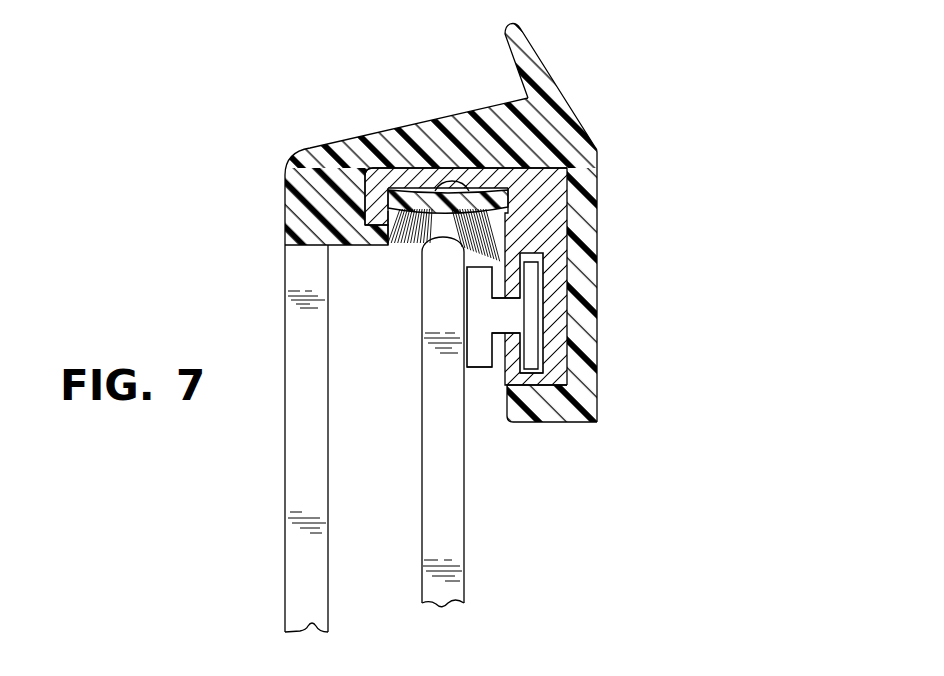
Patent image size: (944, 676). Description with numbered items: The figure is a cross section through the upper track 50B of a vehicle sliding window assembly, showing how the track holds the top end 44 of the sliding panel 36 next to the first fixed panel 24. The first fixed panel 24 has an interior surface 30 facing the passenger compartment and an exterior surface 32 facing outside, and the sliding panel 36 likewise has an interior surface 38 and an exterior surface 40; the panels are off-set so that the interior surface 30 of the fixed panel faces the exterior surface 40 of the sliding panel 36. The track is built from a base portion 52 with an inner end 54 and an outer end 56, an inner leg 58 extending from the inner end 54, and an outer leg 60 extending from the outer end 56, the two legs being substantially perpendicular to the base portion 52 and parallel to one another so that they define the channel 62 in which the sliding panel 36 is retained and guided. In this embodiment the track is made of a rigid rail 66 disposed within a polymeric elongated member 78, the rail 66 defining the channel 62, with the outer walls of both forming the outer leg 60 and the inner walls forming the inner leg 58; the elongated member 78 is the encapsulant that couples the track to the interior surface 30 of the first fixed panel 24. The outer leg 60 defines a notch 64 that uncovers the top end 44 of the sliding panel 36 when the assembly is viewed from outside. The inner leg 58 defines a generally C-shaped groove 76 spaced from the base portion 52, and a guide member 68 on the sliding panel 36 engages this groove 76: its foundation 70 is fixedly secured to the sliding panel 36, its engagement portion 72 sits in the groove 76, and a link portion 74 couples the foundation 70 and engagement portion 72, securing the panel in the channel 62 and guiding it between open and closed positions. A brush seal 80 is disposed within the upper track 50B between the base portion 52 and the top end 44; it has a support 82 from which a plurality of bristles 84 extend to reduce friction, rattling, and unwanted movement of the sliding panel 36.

The upper track 50B is at (641, 190).
The outer end 56 is at (318, 128).
The inner end 54 is at (580, 94).
The elongated member 78 is at (585, 157).
The inner leg 58 is at (568, 302).
The channel 62 is at (497, 406).
The base portion 52 is at (517, 177).
The outer leg 60 is at (372, 204).
The rail 66 is at (547, 221).
The brush seal 80 is at (393, 200).
The support 82 is at (437, 204).
The bristles 84 is at (383, 236).
The foundation 70 is at (475, 283).
The engagement portion 72 is at (532, 275).
The link portion 74 is at (508, 318).
The groove 76 is at (530, 372).
The guide member 68 is at (477, 370).
The interior surface 30 is at (339, 500).
The exterior surface 32 is at (276, 462).
The first fixed panel 24 is at (292, 590).
The top end 44 is at (406, 362).
The sliding panel 36 is at (458, 543).
The interior surface 38 is at (476, 594).
The exterior surface 40 is at (412, 583).
The notch 64 is at (343, 268).